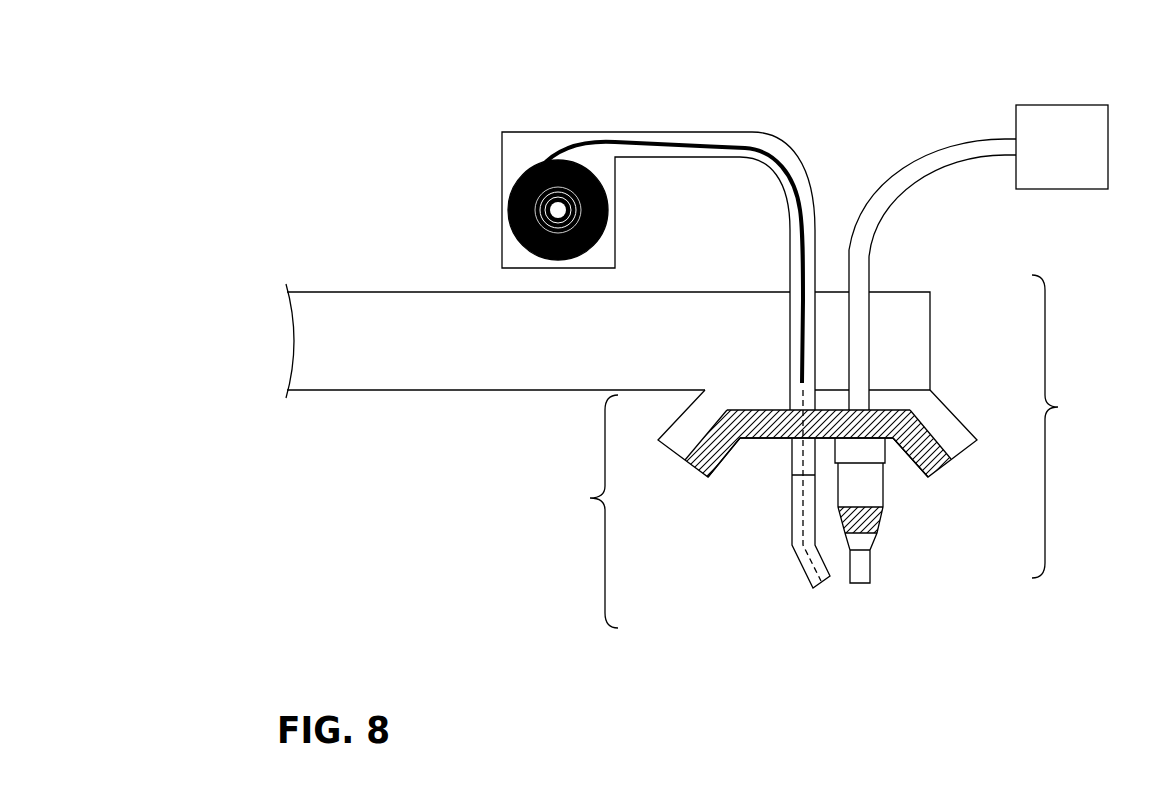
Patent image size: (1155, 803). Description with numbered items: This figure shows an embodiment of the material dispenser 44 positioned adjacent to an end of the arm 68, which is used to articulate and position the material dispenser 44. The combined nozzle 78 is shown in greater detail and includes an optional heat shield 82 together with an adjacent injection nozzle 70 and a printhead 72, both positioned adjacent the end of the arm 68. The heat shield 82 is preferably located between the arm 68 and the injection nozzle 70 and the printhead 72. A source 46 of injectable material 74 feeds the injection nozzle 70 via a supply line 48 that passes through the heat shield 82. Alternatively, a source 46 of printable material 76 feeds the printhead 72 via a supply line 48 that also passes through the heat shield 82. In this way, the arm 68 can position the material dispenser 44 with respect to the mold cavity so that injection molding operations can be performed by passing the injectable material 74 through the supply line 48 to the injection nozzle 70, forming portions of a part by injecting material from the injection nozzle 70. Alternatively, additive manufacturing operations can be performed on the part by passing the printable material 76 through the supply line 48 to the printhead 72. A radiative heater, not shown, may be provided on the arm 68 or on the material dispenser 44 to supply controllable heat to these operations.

The material dispenser 44 is at (1060, 426).
The source 46 is at (530, 125).
The supply line 48 is at (778, 152).
The arm 68 is at (372, 305).
The injection nozzle 70 is at (880, 554).
The printhead 72 is at (791, 564).
The injectable material 74 is at (1087, 126).
The printable material 76 is at (544, 162).
The combined nozzle 78 is at (587, 511).
The heat shield 82 is at (951, 468).